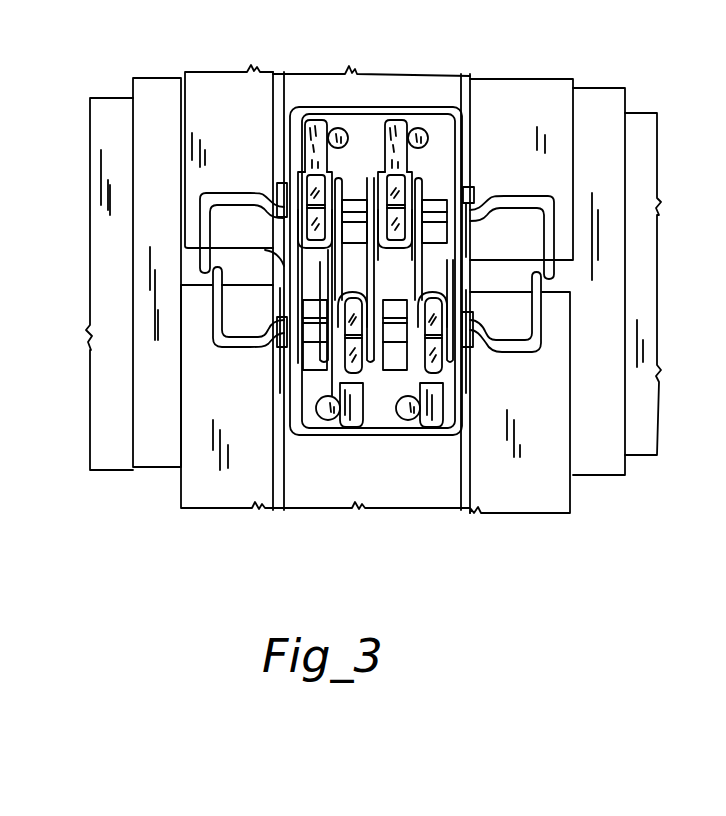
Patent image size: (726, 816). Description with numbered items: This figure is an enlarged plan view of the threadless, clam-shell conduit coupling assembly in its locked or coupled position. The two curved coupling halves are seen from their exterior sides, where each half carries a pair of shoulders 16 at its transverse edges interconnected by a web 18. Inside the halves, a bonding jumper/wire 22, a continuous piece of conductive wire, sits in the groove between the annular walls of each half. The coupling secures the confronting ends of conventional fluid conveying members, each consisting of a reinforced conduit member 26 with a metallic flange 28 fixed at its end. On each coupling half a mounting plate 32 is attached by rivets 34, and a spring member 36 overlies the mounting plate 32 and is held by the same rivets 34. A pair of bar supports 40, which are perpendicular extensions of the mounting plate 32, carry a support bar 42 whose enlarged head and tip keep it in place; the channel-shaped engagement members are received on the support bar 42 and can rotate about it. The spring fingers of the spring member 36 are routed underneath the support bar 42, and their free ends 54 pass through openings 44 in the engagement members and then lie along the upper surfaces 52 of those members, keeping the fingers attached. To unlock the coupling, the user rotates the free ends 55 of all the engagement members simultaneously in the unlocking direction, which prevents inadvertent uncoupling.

The shoulders 16 is at (197, 80).
The web 18 is at (297, 83).
The bonding jumper/wire 22 is at (207, 193).
The reinforced conduit member 26 is at (103, 120).
The metallic flange 28 is at (163, 90).
The mounting plate 32 is at (398, 110).
The rivets 34 is at (338, 128).
The spring member 36 is at (393, 117).
The bar supports 40 is at (312, 200).
The support bar 42 is at (358, 200).
The openings 44 is at (275, 260).
The upper surfaces 52 is at (320, 160).
The free ends 54 is at (312, 185).
The free ends 55 is at (320, 118).